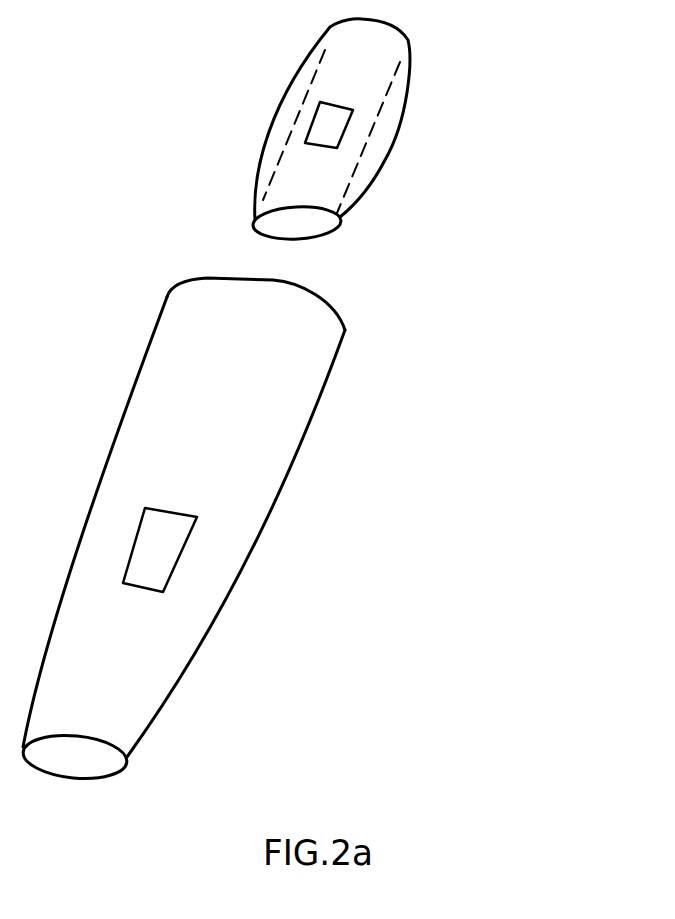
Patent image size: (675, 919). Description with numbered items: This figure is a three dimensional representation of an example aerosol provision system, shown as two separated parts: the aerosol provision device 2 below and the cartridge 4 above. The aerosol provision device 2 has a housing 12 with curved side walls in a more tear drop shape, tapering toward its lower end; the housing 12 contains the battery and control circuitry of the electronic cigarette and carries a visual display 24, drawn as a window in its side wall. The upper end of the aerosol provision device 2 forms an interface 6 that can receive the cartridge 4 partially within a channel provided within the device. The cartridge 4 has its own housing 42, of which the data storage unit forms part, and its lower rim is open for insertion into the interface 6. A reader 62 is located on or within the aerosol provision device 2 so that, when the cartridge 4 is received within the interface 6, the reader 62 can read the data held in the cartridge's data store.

The aerosol provision device 2 is at (249, 530).
The cartridge 4 is at (416, 154).
The interface 6 is at (340, 313).
The housing 12 is at (205, 647).
The visual display 24 is at (161, 530).
The housing of the cartridge 42 is at (344, 221).
The reader 62 is at (327, 127).